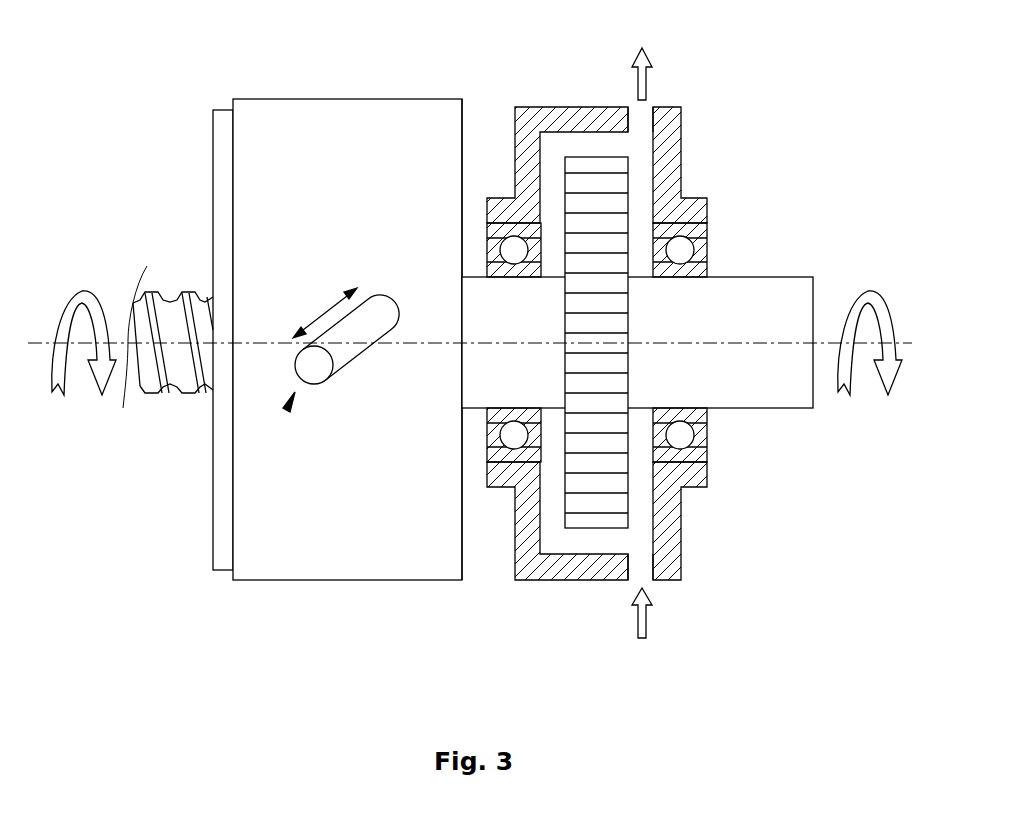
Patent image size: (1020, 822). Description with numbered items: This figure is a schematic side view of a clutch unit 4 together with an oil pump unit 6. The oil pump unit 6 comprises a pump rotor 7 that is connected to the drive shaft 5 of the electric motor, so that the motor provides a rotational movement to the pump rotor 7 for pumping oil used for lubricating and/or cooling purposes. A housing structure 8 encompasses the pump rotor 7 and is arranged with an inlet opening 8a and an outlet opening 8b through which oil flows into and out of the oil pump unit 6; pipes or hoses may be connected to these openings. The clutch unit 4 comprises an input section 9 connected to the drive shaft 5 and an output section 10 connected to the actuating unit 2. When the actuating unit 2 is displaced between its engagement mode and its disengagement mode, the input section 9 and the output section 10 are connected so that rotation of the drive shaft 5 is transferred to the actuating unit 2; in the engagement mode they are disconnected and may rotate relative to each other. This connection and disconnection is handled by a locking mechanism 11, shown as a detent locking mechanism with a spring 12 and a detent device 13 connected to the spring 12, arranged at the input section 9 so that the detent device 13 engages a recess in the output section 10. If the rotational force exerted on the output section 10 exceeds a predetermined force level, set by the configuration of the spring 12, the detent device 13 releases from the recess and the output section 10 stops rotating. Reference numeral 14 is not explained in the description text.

The actuating unit 2 is at (98, 82).
The clutch unit 4 is at (352, 99).
The drive shaft 5 is at (765, 277).
The oil pump unit 6 is at (728, 100).
The pump rotor 7 is at (604, 157).
The housing structure 8 is at (672, 110).
The inlet opening 8a is at (641, 566).
The outlet opening 8b is at (645, 120).
The input section 9 is at (463, 136).
The output section 10 is at (223, 185).
The locking mechanism 11 is at (287, 408).
The spring 12 is at (360, 328).
The detent device 13 is at (315, 373).
The worm 14 is at (181, 293).